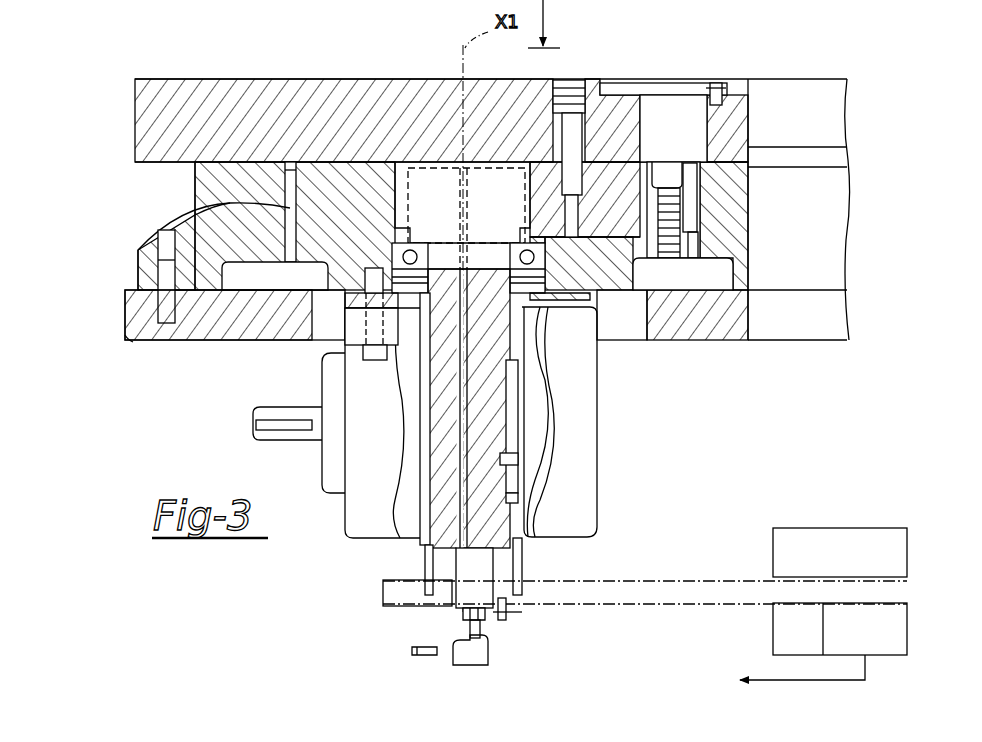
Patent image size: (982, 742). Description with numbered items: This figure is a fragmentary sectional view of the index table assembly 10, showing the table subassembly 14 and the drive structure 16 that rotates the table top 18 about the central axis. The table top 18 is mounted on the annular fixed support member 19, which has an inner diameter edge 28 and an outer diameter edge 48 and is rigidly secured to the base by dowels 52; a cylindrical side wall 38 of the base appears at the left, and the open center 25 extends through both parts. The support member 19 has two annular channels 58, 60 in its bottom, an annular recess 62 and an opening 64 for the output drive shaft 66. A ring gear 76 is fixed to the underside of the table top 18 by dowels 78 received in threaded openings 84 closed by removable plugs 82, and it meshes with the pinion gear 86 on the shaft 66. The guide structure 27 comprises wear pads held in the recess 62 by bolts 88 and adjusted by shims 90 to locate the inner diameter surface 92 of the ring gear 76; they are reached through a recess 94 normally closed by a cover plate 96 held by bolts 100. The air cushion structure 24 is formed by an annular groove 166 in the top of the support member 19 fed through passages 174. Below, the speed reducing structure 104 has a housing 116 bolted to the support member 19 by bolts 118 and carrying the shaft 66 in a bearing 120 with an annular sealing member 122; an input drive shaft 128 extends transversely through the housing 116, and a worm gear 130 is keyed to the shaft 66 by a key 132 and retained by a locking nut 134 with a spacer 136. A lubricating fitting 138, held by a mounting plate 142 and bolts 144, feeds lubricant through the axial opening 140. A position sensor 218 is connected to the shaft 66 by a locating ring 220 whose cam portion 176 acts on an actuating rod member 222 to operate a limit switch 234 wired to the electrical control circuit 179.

The index table assembly 10 is at (186, 393).
The table subassembly 14 is at (126, 166).
The drive structure 16 is at (618, 499).
The table top 18 is at (133, 150).
The fixed support member 19 is at (135, 272).
The segmented air cushion structure 24 is at (262, 187).
The open center 25 is at (748, 110).
The guide structure 27 is at (698, 195).
The inner diameter edge 28 is at (736, 258).
The cylindrical side wall 38 is at (131, 336).
The outer diameter edge 48 is at (133, 255).
The dowel 52 is at (168, 325).
The annular channel 58 is at (285, 287).
The annular channel 60 is at (692, 284).
The annular recess 62 is at (403, 152).
The opening 64 is at (599, 322).
The output drive shaft 66 is at (497, 322).
The ring gear 76 is at (604, 155).
The dowel 78 is at (548, 112).
The removable plug 82 is at (568, 90).
The threaded opening 84 is at (600, 110).
The pinion gear 86 is at (420, 213).
The bolt 88 is at (700, 170).
The shim 90 is at (698, 215).
The inner diameter surface 92 is at (664, 170).
The recess 94 is at (694, 132).
The cover plate 96 is at (690, 78).
The bolt 100 is at (714, 86).
The speed reducing structure 104 is at (590, 403).
The housing 116 is at (406, 465).
The bolt 118 is at (378, 328).
The bearing 120 is at (540, 292).
The annular sealing member 122 is at (537, 298).
The input drive shaft 128 is at (291, 441).
The worm gear 130 is at (520, 510).
The key 132 is at (520, 424).
The locking nut 134 is at (524, 601).
The spacer 136 is at (455, 571).
The lubricating fitting 138 is at (462, 657).
The axial opening 140 is at (476, 228).
The mounting plate 142 is at (456, 620).
The bolt 144 is at (503, 618).
The annular groove 166 is at (290, 160).
The passage 174 is at (195, 211).
The cam portion 176 is at (525, 586).
The electrical control circuit 179 is at (738, 683).
The position sensor 218 is at (788, 530).
The locating ring 220 is at (521, 602).
The actuating rod member 222 is at (645, 582).
The limit switch 234 is at (893, 646).